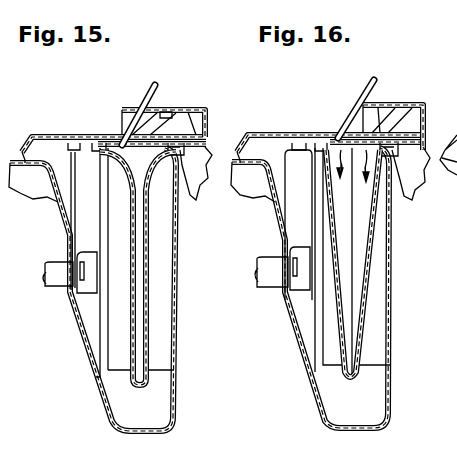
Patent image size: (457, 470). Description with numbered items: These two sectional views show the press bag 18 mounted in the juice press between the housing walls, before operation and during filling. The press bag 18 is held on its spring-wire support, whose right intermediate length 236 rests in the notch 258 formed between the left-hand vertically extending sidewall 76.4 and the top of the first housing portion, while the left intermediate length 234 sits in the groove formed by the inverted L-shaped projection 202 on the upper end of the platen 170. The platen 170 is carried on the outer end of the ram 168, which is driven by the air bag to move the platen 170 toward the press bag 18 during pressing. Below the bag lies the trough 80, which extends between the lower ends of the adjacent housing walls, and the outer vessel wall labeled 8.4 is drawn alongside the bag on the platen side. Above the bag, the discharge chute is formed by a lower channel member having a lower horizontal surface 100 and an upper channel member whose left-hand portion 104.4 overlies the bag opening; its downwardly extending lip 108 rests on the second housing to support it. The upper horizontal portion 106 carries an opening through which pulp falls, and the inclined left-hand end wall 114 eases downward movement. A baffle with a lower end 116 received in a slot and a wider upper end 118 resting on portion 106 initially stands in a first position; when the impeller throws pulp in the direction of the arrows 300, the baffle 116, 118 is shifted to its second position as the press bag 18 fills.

In FIG. 15, the left-hand portion of the lower horizontal portion 104.4 is at (50, 135).
In FIG. 15, the downwardly extending lip 108 is at (22, 151).
In FIG. 15, the L-shaped projection 202 is at (82, 136).
In FIG. 15, the left-hand end wall 114 is at (122, 135).
In FIG. 15, the upper end of the baffle 118 is at (148, 86).
In FIG. 15, the upper horizontal portion 106 is at (190, 105).
In FIG. 15, the lower end of the baffle 116 is at (166, 108).
In FIG. 15, the lower horizontal surface 100 is at (208, 126).
In FIG. 15, the notch 258 is at (215, 128).
In FIG. 15, the left intermediate length 234 is at (76, 218).
In FIG. 15, the platen 170 is at (70, 223).
In FIG. 15, the ram 168 is at (62, 266).
In FIG. 15, the vessel wall 8.4 is at (67, 291).
In FIG. 15, the left-hand vertically extending sidewall 76.4 is at (179, 322).
In FIG. 15, the press bag 18 is at (146, 355).
In FIG. 16, the press bag 18 is at (365, 347).
In FIG. 15, the trough 80 is at (163, 422).
In FIG. 15, the right intermediate length 236 is at (186, 188).
In FIG. 16, the arrows 300 is at (386, 104).